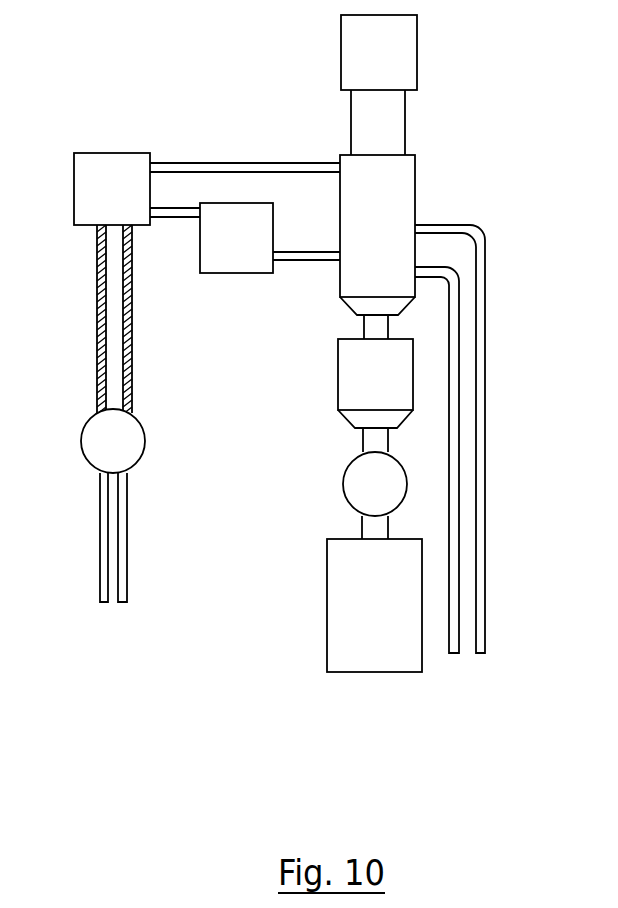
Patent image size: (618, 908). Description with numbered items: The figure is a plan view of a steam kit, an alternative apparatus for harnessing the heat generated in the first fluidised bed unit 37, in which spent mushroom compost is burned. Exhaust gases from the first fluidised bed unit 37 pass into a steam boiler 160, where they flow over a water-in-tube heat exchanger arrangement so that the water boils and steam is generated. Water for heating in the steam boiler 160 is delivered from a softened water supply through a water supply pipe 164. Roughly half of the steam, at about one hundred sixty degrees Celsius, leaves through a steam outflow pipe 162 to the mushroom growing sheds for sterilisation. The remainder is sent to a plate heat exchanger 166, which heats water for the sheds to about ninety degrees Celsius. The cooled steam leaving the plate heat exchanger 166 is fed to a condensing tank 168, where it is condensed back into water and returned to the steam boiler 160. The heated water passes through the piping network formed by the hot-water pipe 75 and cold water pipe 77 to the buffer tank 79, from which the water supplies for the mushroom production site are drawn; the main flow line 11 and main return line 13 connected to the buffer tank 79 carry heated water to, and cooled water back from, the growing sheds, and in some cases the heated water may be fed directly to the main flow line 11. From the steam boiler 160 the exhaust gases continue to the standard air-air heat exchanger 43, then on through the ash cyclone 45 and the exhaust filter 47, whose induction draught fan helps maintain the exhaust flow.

The first fluidised bed unit 37 is at (365, 69).
The steam boiler 160 is at (398, 240).
The plate heat exchanger 166 is at (132, 202).
The condensing tank 168 is at (256, 252).
The steam outflow pipe 162 is at (483, 295).
The water supply pipe 164 is at (453, 491).
The air-air heat exchanger 43 is at (364, 388).
The ash cyclone 45 is at (364, 499).
The exhaust filter 47 is at (360, 605).
The buffer tank 79 is at (102, 458).
The cold water pipe 77 is at (97, 290).
The hot-water pipe 75 is at (124, 388).
The main flow line 11 is at (100, 577).
The main return line 13 is at (125, 590).